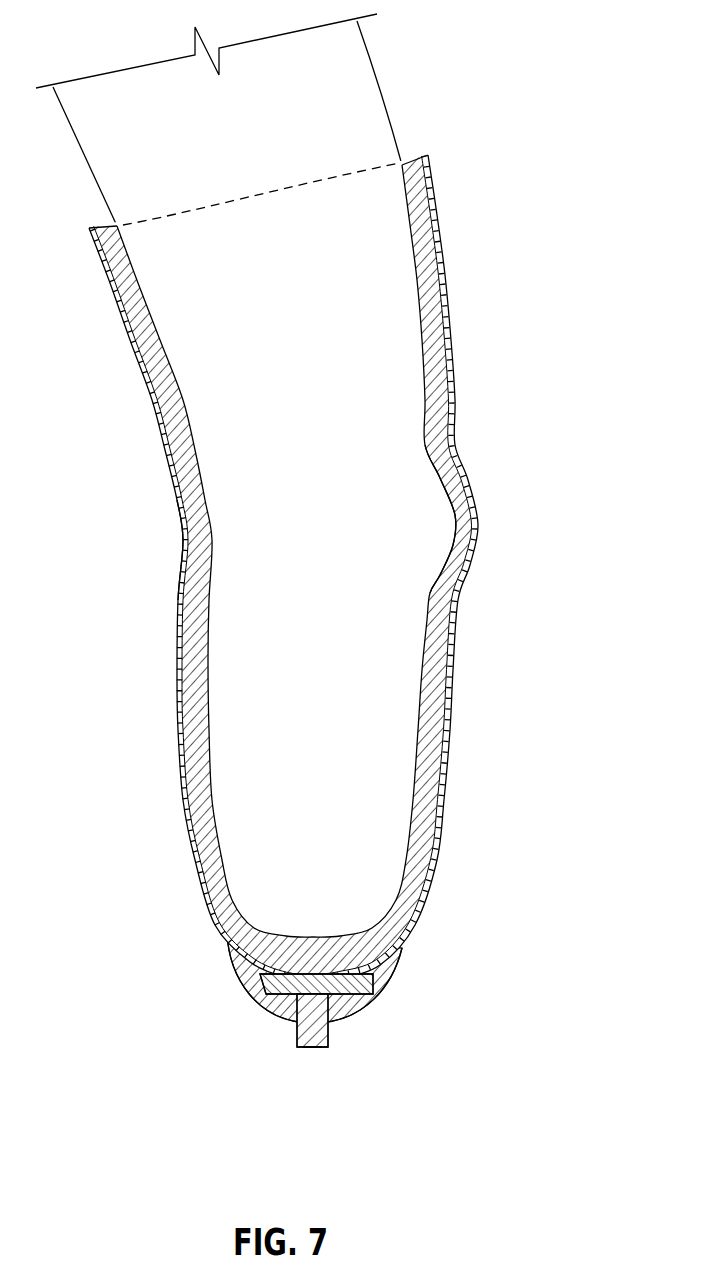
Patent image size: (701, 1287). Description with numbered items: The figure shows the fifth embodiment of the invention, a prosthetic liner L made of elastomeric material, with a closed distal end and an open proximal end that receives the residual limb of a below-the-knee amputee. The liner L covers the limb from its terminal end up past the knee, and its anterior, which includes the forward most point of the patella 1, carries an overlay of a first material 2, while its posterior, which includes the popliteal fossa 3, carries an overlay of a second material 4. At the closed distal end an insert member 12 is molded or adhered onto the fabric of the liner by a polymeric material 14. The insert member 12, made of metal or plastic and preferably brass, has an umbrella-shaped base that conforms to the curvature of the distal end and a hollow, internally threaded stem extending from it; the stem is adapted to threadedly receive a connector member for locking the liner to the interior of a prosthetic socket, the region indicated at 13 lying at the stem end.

The forward most point of the patella 1 is at (452, 530).
The first material 2 is at (448, 720).
The popliteal fossa 3 is at (210, 537).
The second material 4 is at (177, 718).
The liner L is at (430, 795).
The insert member 12 is at (295, 1032).
The fastening element 13 is at (311, 1046).
The polymeric material 14 is at (400, 990).